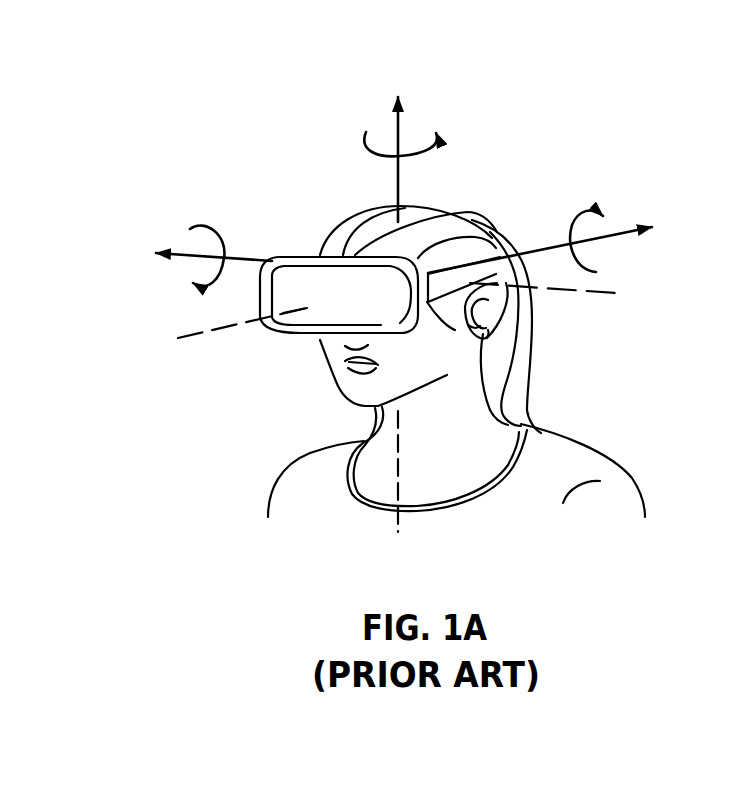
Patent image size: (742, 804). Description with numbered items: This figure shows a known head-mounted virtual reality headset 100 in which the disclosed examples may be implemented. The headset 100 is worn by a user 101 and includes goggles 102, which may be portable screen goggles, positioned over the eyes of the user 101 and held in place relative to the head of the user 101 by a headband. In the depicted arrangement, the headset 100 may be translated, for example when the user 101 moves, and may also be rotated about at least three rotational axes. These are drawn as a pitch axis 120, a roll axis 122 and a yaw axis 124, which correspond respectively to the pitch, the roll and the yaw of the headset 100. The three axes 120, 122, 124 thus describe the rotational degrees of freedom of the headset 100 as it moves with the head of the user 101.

The head-mounted virtual reality headset 100 is at (558, 66).
The user 101 is at (352, 223).
The goggles 102 is at (286, 328).
The pitch axis 120 is at (165, 247).
The roll axis 122 is at (641, 220).
The yaw axis 124 is at (395, 97).